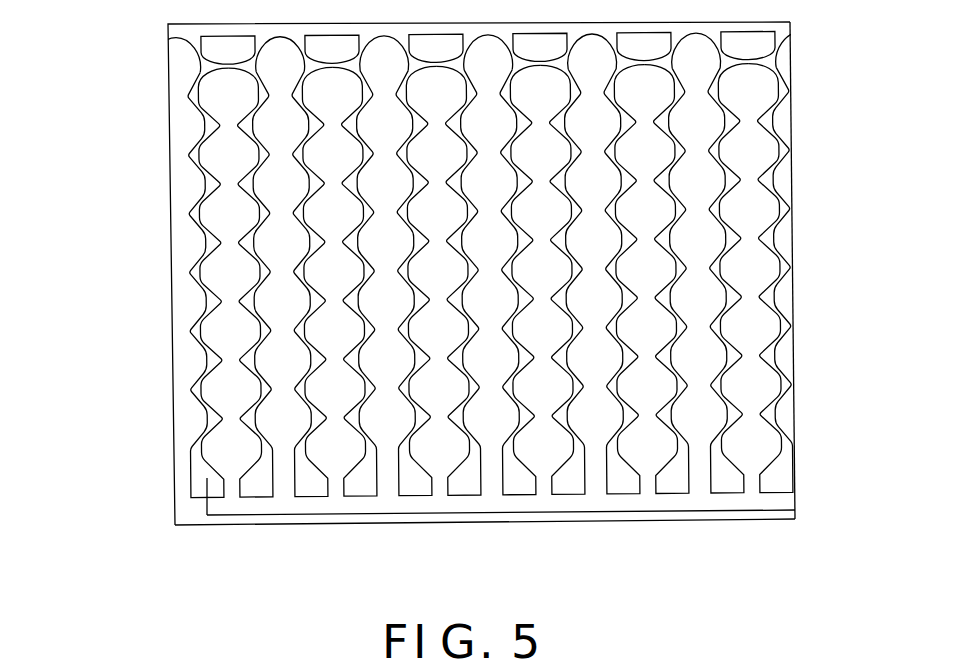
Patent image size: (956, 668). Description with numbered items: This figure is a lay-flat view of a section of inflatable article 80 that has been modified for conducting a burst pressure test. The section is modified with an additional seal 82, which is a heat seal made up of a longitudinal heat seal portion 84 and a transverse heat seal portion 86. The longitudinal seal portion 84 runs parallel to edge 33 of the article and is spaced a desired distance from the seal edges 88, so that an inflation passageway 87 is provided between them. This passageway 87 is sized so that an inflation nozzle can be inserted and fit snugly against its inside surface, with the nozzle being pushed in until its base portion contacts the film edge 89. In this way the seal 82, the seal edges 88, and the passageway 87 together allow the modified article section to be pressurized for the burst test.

The inflatable article 80 is at (103, 128).
The additional seal 82 is at (202, 517).
The longitudinal heat seal portion 84 is at (248, 520).
The transverse heat seal portion 86 is at (207, 503).
The inflation passageway 87 is at (723, 502).
The seal edges 88 is at (315, 502).
The film edge 89 is at (797, 498).
The edge 33 is at (693, 525).